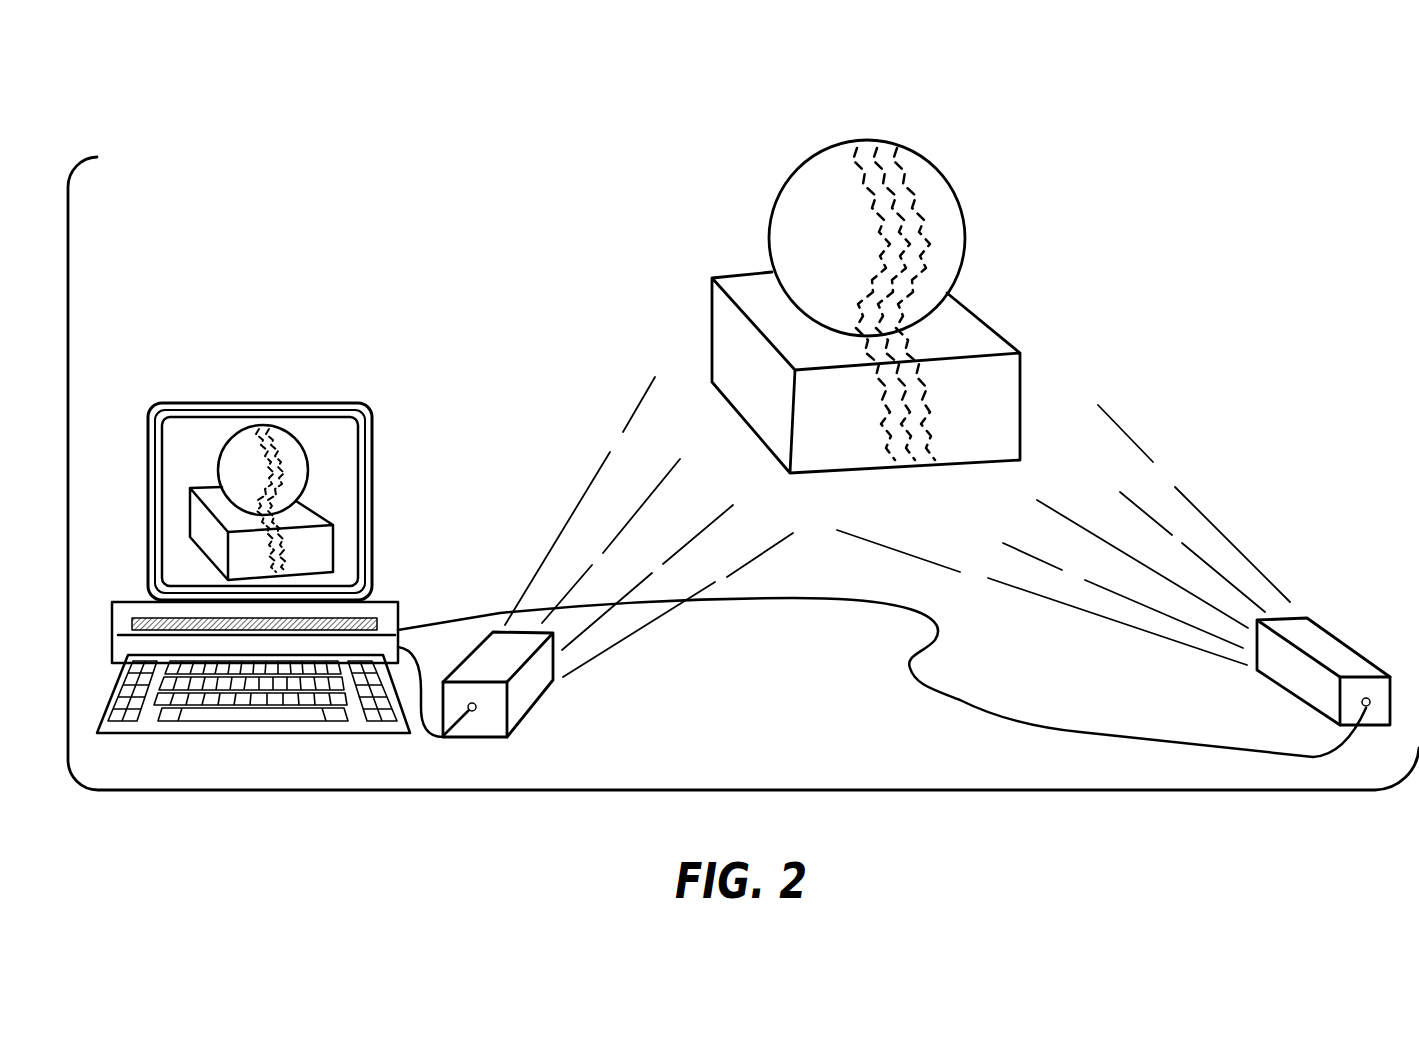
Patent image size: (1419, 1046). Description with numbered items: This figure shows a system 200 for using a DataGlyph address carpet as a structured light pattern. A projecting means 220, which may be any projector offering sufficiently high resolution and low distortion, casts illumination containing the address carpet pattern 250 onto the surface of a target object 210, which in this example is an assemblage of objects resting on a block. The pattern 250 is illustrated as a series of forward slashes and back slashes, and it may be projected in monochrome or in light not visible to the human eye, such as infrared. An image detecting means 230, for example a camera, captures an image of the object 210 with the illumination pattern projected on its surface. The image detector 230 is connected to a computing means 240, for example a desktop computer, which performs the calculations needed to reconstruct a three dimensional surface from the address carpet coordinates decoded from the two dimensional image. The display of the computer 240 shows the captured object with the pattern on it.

The structured light measurement system 200 is at (1125, 137).
The target object 210 is at (910, 142).
The projecting means 220 is at (1342, 640).
The image detecting means 230 is at (533, 706).
The computing means 240 is at (312, 395).
The address carpet pattern 250 is at (877, 150).